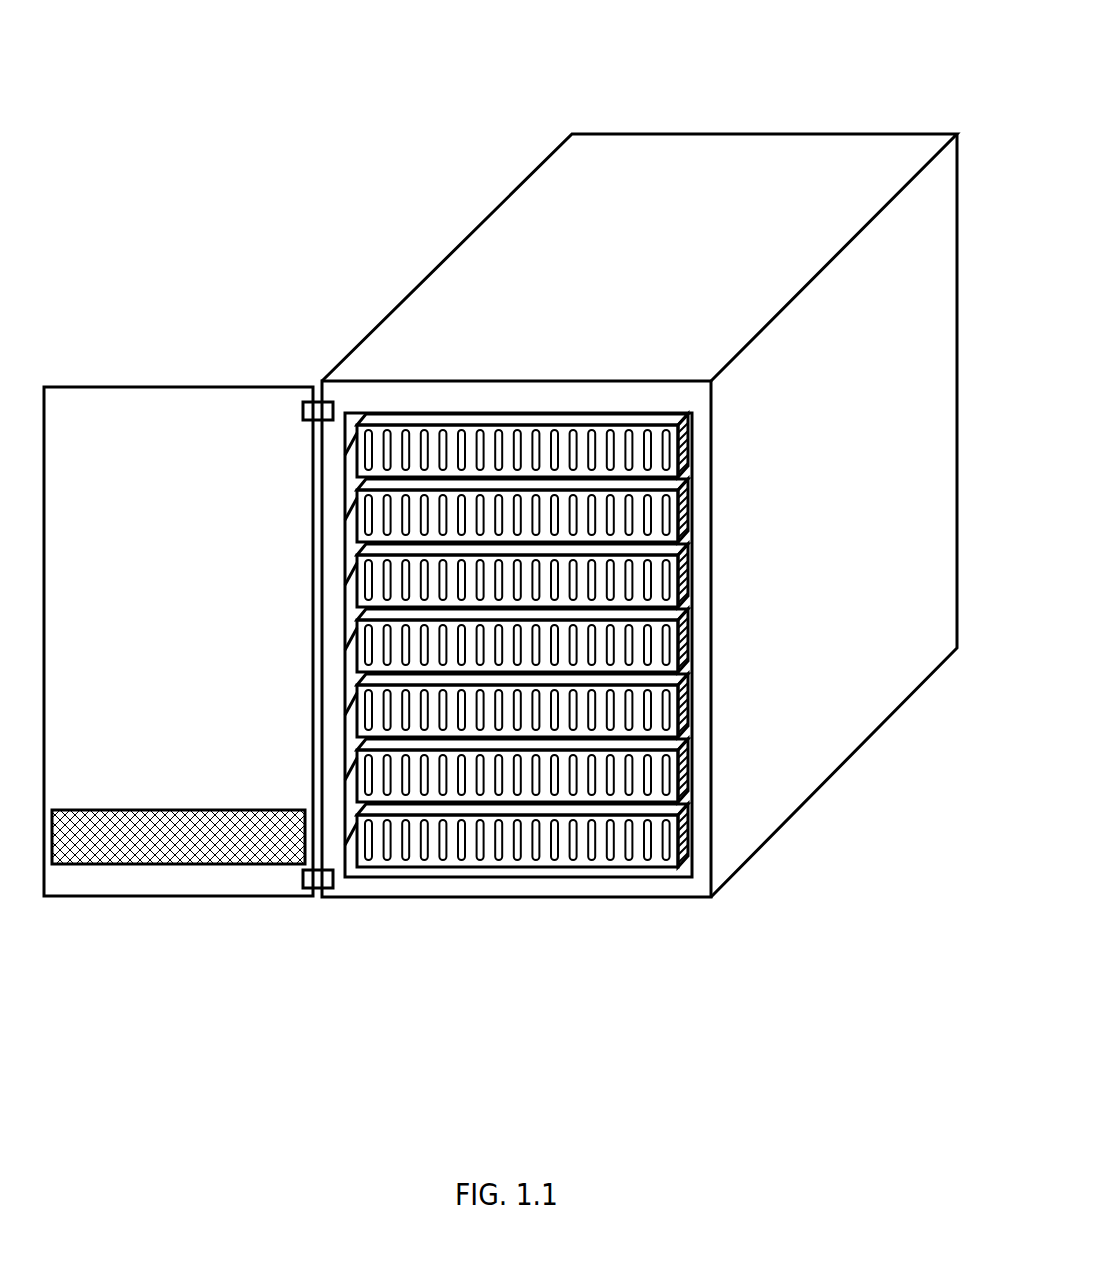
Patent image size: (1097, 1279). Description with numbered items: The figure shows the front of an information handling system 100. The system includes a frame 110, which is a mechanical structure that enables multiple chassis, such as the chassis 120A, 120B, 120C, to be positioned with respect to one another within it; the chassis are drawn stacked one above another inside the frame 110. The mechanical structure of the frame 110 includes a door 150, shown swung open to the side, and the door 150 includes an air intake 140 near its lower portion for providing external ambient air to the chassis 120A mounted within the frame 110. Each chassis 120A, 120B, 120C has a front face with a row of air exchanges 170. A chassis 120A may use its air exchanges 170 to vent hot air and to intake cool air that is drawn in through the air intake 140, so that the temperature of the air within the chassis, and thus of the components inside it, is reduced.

The information handling system 100 is at (504, 555).
The frame 110 is at (627, 925).
The chassis 120A is at (558, 267).
The chassis 120B is at (682, 543).
The chassis 120C is at (682, 730).
The air intake 140 is at (227, 868).
The door 150 is at (188, 742).
The air exchanges 170 is at (518, 432).